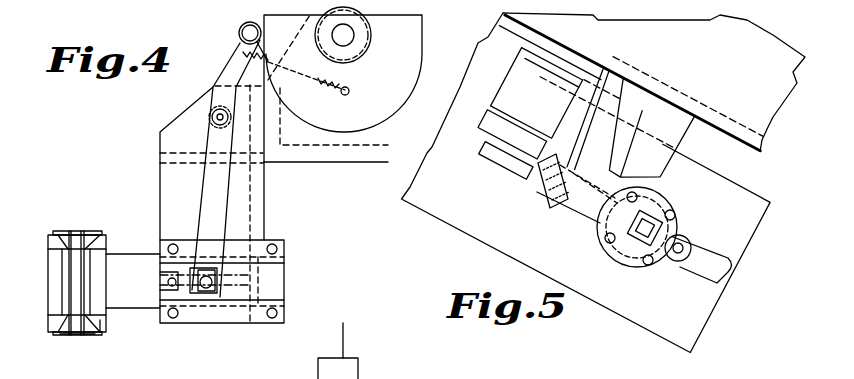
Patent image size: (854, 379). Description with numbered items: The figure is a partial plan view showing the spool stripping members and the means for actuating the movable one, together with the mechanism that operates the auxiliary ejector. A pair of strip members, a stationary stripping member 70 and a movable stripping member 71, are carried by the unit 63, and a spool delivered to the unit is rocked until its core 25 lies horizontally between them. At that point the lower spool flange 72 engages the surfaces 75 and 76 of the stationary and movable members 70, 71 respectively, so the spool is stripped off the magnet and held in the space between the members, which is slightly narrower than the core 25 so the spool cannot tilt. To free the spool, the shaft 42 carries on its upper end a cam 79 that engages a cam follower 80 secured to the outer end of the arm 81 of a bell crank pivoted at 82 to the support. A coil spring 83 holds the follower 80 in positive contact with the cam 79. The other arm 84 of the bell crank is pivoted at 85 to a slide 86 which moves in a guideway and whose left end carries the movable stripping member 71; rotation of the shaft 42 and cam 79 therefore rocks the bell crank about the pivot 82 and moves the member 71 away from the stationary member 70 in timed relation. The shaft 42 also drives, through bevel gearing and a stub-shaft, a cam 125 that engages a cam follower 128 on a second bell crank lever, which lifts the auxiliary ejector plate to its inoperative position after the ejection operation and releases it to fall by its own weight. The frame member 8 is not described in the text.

In FIG. 4, the frame member 8 is at (348, 330).
In FIG. 4, the core 25 is at (77, 235).
In FIG. 4, the shaft 42 is at (350, 36).
In FIG. 5, the unit 63 is at (480, 378).
In FIG. 4, the stationary stripping member 70 is at (55, 265).
In FIG. 4, the movable stripping member 71 is at (92, 263).
In FIG. 4, the lower spool flange 72 is at (77, 335).
In FIG. 4, the surface 75 is at (58, 312).
In FIG. 4, the surface 76 is at (106, 325).
In FIG. 4, the cam 79 is at (403, 57).
In FIG. 4, the cam follower 80 is at (241, 34).
In FIG. 4, the arm 81 is at (235, 71).
In FIG. 4, the pivot 82 is at (210, 116).
In FIG. 4, the coil spring 83 is at (342, 86).
In FIG. 4, the arm 84 is at (203, 190).
In FIG. 4, the pivot 85 is at (205, 294).
In FIG. 4, the slide 86 is at (275, 283).
In FIG. 5, the cam 125 is at (418, 378).
In FIG. 5, the cam follower 128 is at (538, 165).